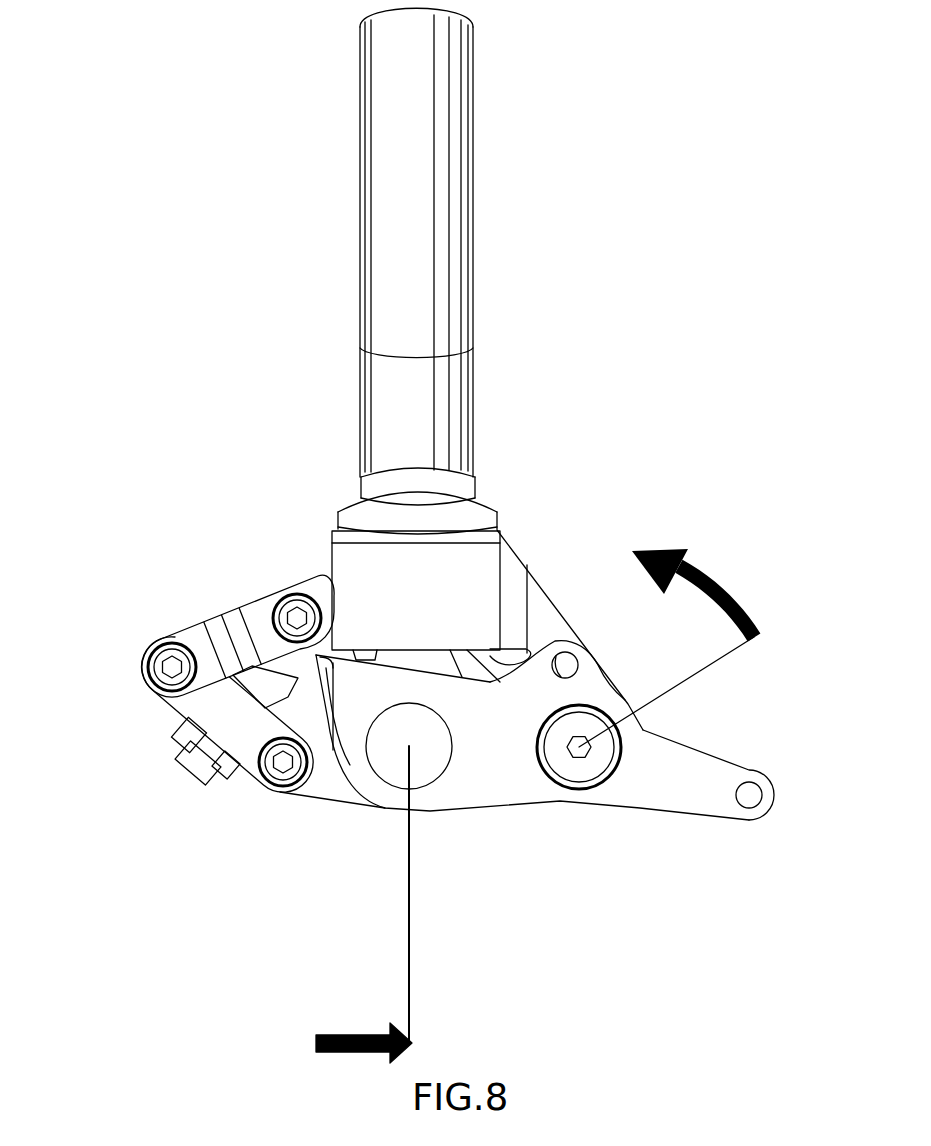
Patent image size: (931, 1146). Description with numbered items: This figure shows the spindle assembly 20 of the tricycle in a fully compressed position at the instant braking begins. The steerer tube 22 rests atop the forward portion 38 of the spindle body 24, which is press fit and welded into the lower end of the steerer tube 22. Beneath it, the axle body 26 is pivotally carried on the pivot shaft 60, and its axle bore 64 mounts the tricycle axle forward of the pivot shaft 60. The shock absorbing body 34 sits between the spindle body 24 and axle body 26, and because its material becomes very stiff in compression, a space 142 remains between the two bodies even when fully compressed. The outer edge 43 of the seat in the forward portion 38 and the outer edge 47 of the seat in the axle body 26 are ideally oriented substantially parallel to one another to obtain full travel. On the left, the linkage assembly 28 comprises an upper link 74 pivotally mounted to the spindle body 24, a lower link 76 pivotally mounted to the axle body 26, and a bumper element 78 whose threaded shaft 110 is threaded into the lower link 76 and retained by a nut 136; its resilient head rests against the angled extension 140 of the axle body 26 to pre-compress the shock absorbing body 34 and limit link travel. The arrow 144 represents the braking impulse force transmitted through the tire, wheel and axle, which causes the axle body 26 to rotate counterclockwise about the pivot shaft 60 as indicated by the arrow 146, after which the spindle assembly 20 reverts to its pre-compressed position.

The spindle assembly 20 is at (705, 455).
The steerer tube 22 is at (470, 405).
The spindle body 24 is at (592, 605).
The axle body 26 is at (535, 828).
The linkage assembly 28 is at (110, 638).
The shock absorbing body 34 is at (472, 653).
The forward portion 38 is at (443, 557).
The outer edge 43 is at (418, 650).
The outer edge 47 is at (403, 662).
The pivot shaft 60 is at (600, 763).
The axle bore 64 is at (433, 773).
The upper link 74 is at (222, 608).
The lower link 76 is at (175, 698).
The bumper element 78 is at (169, 780).
The threaded shaft 110 is at (193, 768).
The nut 136 is at (228, 778).
The angled extension 140 is at (330, 670).
The space 142 is at (443, 660).
The arrow 144 is at (340, 1033).
The arrow 146 is at (718, 585).